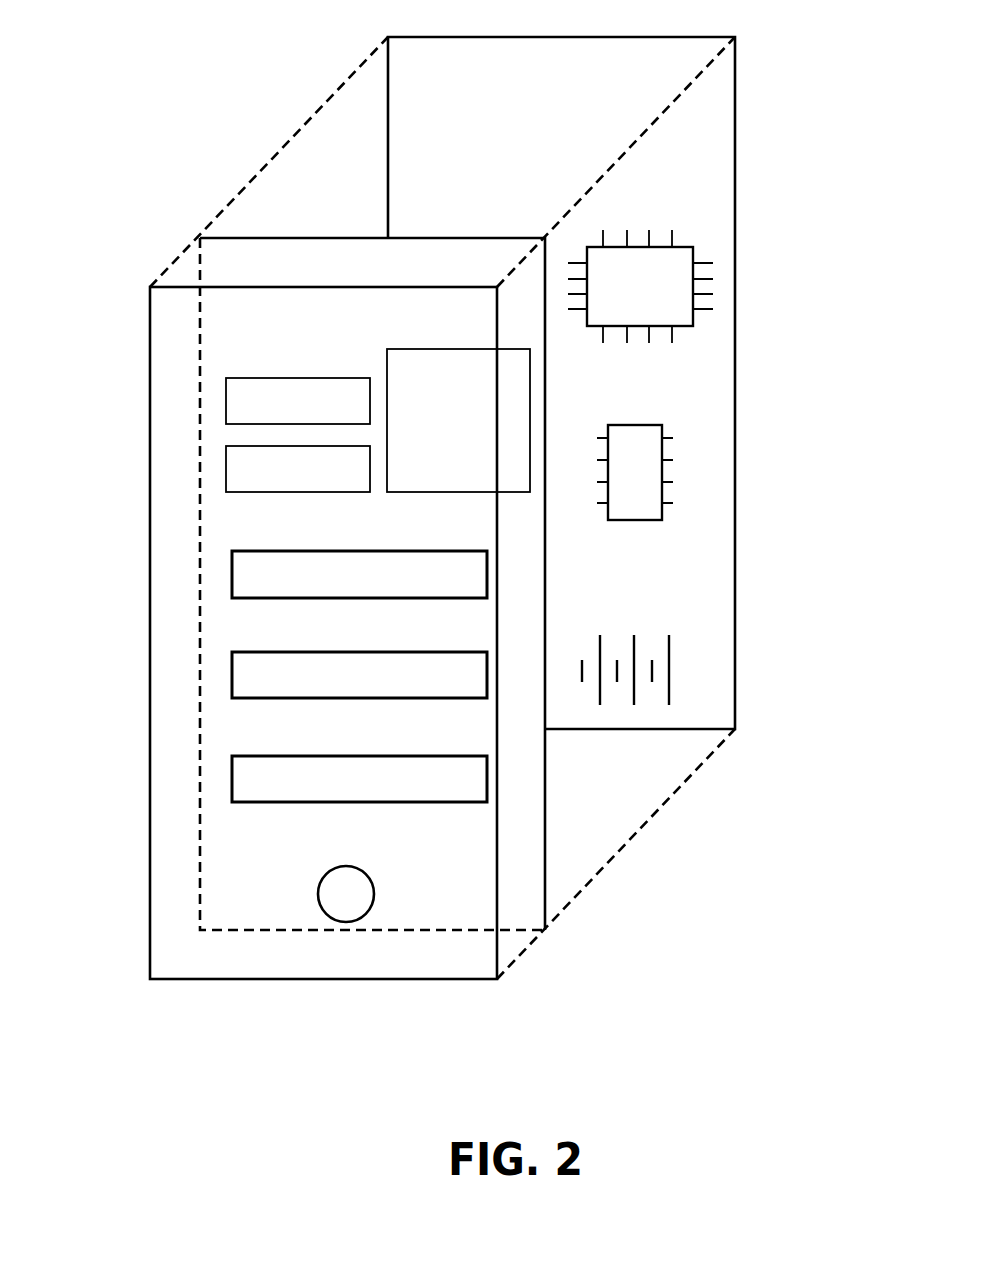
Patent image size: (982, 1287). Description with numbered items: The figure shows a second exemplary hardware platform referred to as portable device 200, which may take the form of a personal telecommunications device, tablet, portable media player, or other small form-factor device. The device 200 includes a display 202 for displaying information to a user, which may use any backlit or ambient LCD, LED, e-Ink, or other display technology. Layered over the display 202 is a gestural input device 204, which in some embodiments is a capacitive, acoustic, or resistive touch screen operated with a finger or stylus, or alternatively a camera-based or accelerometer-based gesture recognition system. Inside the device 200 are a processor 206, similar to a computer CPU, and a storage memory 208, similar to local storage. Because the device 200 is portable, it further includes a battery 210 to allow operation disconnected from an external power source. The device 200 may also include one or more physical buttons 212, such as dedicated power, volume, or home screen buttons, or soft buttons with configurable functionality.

The portable device 200 is at (142, 612).
The display 202 is at (265, 238).
The gestural input device 204 is at (443, 979).
The processor 206 is at (708, 287).
The storage memory 208 is at (670, 475).
The battery 210 is at (680, 670).
The button 212 is at (370, 875).